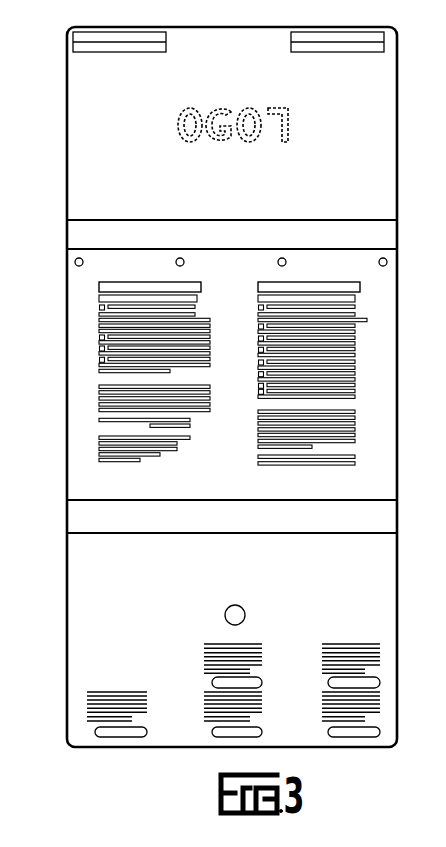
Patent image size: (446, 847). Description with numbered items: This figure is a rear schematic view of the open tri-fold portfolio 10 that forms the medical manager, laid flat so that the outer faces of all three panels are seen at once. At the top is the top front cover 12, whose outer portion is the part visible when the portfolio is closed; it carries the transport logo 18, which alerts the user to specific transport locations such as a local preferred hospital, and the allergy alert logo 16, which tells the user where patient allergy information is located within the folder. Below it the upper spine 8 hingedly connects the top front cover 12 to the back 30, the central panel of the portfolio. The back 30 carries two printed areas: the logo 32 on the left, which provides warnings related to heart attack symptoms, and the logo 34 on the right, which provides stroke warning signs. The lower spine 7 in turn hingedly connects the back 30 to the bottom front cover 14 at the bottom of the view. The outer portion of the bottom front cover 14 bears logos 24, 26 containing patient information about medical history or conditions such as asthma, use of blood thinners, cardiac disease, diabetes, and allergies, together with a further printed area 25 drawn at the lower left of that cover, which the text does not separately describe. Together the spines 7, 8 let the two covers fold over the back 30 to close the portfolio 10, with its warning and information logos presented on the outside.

The tri-fold portfolio 10 is at (46, 135).
The top front cover 12 is at (369, 164).
The transport logo 18 is at (147, 52).
The allergy alert logo 16 is at (320, 52).
The upper spine 8 is at (365, 230).
The back 30 is at (105, 473).
The logo 32 is at (87, 308).
The logo 34 is at (368, 301).
The lower spine 7 is at (350, 513).
The bottom front cover 14 is at (171, 578).
The left vent 25 is at (108, 689).
The logo 26 is at (269, 671).
The logo 24 is at (374, 632).